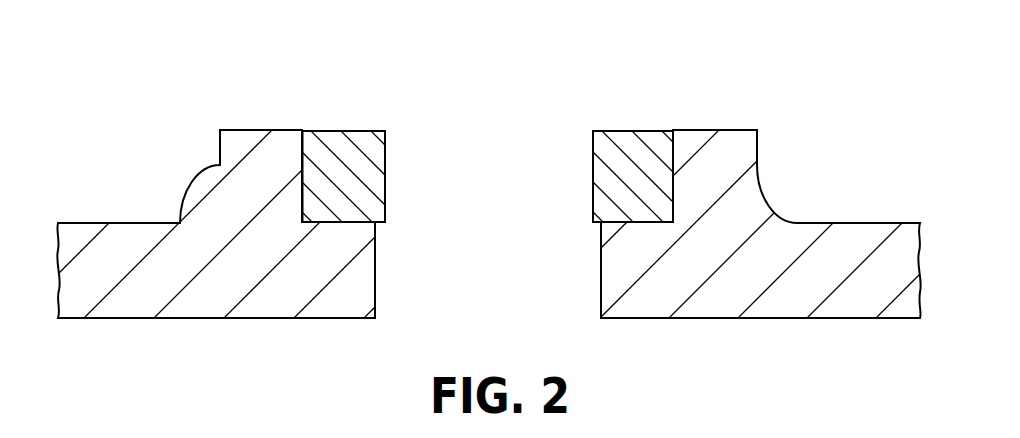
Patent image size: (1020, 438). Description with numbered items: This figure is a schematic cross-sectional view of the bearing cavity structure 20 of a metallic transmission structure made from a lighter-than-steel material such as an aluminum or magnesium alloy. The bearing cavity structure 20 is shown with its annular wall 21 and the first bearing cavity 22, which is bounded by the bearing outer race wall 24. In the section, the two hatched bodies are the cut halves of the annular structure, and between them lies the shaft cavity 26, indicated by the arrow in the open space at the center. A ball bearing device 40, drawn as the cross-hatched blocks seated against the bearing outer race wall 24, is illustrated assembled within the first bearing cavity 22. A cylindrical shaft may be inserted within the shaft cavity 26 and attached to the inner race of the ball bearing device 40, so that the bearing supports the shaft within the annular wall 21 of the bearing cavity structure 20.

The bearing cavity structure 20 is at (762, 168).
The annular wall 21 is at (260, 128).
The first bearing cavity 22 is at (657, 175).
The bearing outer race wall 24 is at (303, 173).
The shaft cavity 26 is at (472, 170).
The ball bearing device 40 is at (627, 131).